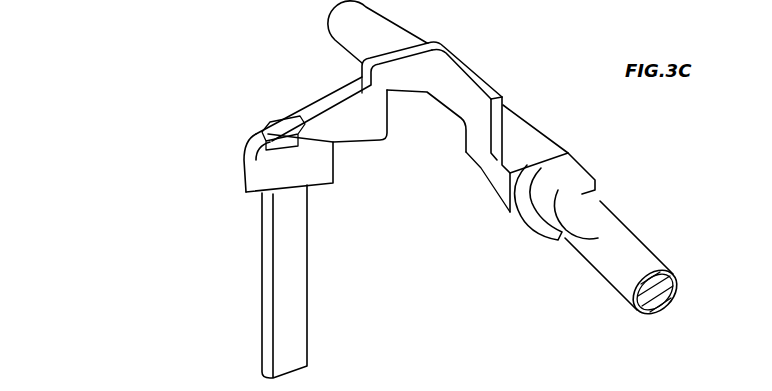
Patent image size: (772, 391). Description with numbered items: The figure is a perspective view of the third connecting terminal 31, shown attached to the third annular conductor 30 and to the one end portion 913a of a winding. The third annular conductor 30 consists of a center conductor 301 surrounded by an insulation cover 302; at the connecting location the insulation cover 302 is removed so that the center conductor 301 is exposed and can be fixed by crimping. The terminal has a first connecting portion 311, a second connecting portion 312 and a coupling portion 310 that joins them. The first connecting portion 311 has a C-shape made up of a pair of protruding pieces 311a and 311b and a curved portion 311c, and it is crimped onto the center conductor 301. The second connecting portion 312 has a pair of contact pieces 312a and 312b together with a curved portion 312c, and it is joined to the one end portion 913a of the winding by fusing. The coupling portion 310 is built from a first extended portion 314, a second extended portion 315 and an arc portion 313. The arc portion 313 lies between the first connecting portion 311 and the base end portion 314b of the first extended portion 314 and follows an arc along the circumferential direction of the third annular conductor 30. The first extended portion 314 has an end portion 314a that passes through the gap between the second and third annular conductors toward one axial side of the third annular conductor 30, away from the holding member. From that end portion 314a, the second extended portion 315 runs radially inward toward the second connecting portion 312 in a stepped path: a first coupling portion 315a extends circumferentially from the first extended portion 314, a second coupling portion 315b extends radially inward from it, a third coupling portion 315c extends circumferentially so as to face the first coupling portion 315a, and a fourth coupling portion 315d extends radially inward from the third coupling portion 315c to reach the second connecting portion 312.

The third connecting terminal 31 is at (281, 57).
The coupling portion 310 is at (424, 175).
The arc portion 313 is at (485, 170).
The first extended portion 314 is at (503, 160).
The end portion 314a is at (478, 110).
The base end portion 314b is at (480, 170).
The second extended portion 315 is at (379, 158).
The first coupling portion 315a is at (457, 93).
The second coupling portion 315b is at (400, 80).
The third coupling portion 315c is at (366, 88).
The fourth coupling portion 315d is at (346, 134).
The second connecting portion 312 is at (251, 168).
The contact piece 312a is at (280, 123).
The contact piece 312b is at (308, 177).
The curved portion 312c is at (248, 163).
The first connecting portion 311 is at (586, 205).
The protruding piece 311a is at (575, 172).
The protruding piece 311b is at (556, 232).
The curved portion 311c is at (536, 210).
The third annular conductor 30 is at (643, 279).
The center conductor 301 is at (661, 296).
The insulation cover 302 is at (650, 313).
The one end portion 913a is at (294, 366).